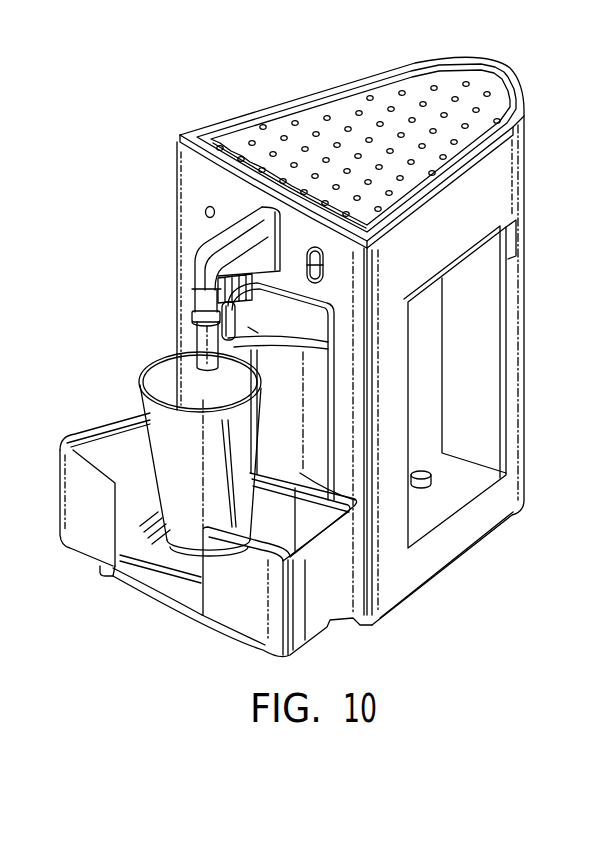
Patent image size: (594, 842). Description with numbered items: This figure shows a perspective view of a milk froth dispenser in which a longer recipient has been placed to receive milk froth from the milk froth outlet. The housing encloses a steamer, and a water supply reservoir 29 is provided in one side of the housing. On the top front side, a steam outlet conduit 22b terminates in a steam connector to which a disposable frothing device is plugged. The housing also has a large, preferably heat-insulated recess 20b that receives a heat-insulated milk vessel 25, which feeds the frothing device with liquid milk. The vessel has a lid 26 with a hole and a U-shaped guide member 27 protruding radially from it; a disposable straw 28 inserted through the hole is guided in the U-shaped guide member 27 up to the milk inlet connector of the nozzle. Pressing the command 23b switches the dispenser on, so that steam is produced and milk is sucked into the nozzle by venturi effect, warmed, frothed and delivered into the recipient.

The recess 20b is at (302, 414).
The steam outlet conduit 22b is at (196, 262).
The command 23b is at (326, 263).
The heat-insulated milk vessel 25 is at (298, 347).
The lid 26 is at (310, 323).
The U-shaped guide member 27 is at (242, 314).
The disposable straw 28 is at (194, 333).
The water supply reservoir 29 is at (489, 318).